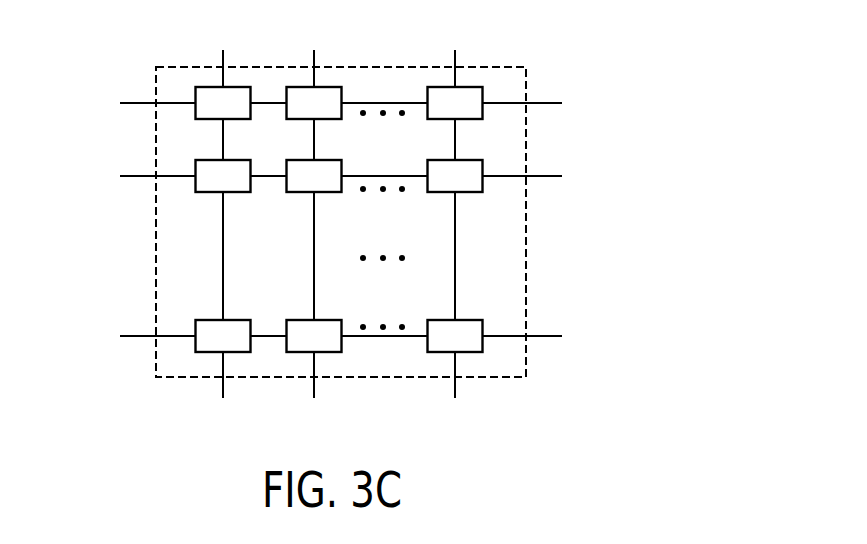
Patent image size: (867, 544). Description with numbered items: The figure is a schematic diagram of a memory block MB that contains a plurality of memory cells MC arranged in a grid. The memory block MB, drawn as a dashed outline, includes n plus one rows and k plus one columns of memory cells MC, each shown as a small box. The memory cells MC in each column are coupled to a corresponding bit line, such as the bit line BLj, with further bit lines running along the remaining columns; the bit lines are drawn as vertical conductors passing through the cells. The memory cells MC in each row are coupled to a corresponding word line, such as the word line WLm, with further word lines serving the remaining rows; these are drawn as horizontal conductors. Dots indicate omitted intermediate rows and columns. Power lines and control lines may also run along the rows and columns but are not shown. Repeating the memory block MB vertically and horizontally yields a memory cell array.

The memory block MB is at (377, 65).
The memory cell MC is at (339, 219).
The word line WLm is at (312, 105).
The bit line BLj is at (222, 241).